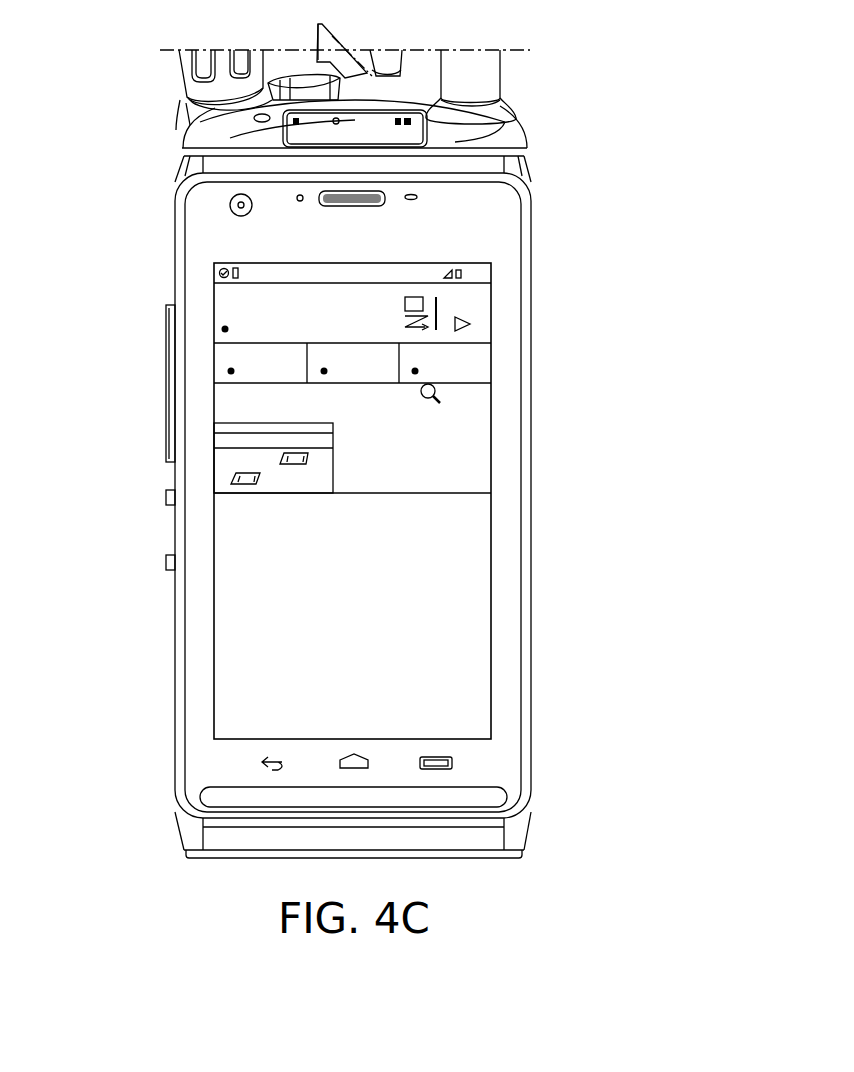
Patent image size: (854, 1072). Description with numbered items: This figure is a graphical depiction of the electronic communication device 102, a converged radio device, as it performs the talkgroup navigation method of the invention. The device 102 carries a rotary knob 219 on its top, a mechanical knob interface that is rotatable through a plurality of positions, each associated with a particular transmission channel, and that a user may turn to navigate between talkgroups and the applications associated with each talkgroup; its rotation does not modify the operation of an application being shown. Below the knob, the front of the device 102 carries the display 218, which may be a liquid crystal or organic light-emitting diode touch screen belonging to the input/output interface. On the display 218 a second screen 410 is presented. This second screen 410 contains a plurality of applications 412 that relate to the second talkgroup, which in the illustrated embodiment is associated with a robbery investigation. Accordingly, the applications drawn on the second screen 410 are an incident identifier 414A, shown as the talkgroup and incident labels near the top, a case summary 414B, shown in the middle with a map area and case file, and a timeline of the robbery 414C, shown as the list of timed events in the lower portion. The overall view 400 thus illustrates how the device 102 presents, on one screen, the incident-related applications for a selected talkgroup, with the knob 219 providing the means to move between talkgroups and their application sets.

The user interface of portable radio 400 is at (112, 40).
The electronic communication device 102 is at (531, 186).
The rotary knob 219 is at (500, 72).
The display 218 is at (531, 500).
The second screen 410 is at (492, 275).
The plurality of applications 412 is at (636, 399).
The incident identifier 414A is at (214, 358).
The case summary 414B is at (214, 460).
The timeline of the robbery 414C is at (214, 612).